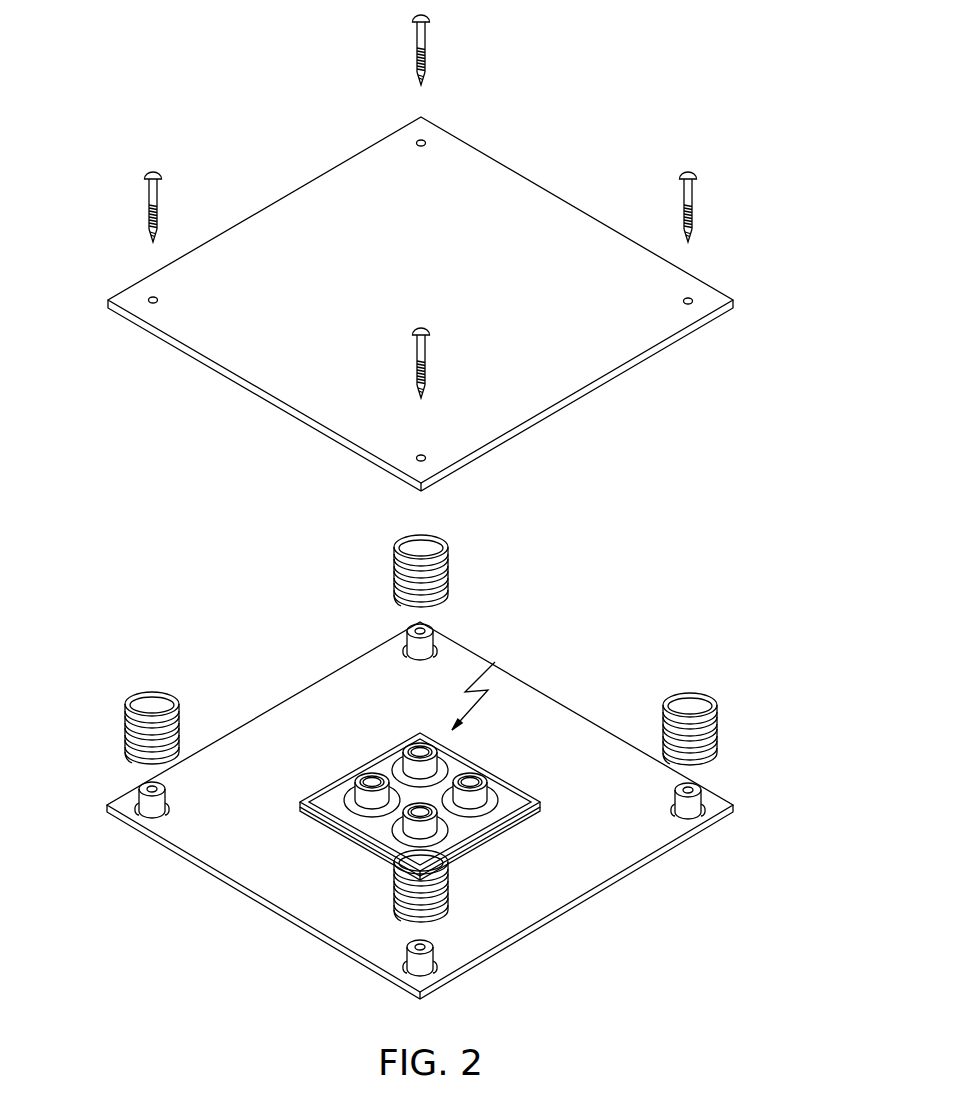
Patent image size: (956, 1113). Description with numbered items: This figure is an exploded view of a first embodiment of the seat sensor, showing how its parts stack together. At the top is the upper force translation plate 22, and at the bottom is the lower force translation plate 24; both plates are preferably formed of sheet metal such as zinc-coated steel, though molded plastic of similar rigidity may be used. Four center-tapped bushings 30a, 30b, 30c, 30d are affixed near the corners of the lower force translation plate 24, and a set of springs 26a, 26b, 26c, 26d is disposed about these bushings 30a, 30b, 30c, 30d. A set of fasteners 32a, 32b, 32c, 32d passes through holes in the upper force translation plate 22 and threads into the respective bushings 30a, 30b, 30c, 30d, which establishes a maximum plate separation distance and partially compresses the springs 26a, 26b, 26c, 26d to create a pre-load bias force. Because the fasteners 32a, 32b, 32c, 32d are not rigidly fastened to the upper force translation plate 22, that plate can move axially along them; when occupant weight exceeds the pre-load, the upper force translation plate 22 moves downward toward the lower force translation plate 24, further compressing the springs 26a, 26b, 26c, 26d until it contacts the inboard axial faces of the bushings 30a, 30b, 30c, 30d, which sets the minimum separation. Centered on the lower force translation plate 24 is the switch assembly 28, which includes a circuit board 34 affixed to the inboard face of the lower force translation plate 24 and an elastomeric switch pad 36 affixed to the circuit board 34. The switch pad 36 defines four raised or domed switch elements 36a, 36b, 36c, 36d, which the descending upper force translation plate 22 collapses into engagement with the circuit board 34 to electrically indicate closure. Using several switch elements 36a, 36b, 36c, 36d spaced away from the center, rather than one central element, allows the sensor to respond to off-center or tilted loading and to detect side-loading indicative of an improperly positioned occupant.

The upper force translation plate 22 is at (531, 199).
The lower force translation plate 24 is at (545, 712).
The spring 26a is at (394, 570).
The spring 26b is at (718, 722).
The spring 26c is at (394, 885).
The spring 26d is at (126, 717).
The switch assembly 28 is at (486, 681).
The center-tapped bushing 30a is at (409, 648).
The center-tapped bushing 30b is at (702, 800).
The center-tapped bushing 30c is at (408, 958).
The center-tapped bushing 30d is at (141, 800).
The fastener 32a is at (429, 18).
The fastener 32b is at (697, 175).
The fastener 32c is at (430, 331).
The fastener 32d is at (162, 175).
The circuit board 34 is at (298, 800).
The elastomeric switch pad 36 is at (348, 816).
The switch element 36a is at (400, 762).
The switch element 36b is at (492, 793).
The switch element 36c is at (452, 828).
The switch element 36d is at (352, 792).